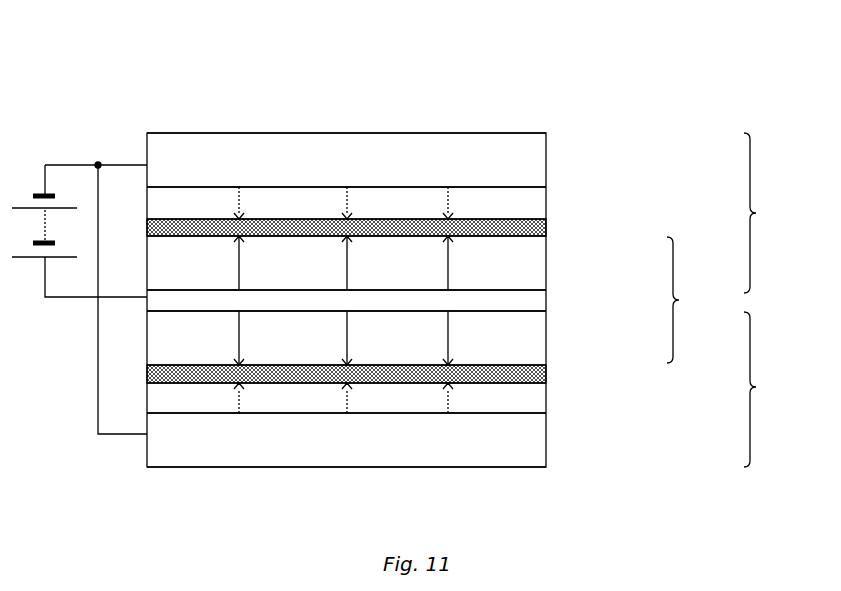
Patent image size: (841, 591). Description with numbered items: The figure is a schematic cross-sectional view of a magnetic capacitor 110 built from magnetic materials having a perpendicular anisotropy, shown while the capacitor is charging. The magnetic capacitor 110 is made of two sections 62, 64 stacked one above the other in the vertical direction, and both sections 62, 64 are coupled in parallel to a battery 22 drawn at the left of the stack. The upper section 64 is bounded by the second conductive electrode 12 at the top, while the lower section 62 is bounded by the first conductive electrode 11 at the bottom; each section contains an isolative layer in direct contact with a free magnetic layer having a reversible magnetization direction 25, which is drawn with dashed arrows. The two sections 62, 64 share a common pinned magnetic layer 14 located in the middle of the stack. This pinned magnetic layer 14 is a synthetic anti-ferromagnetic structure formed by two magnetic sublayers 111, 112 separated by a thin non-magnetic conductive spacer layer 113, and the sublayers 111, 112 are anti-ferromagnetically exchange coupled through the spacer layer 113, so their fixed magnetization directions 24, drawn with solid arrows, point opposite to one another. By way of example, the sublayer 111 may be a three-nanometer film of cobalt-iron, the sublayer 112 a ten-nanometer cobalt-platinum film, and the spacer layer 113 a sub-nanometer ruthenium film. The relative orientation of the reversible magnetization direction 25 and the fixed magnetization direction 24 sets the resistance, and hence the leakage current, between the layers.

The magnetic capacitor 110 is at (553, 115).
The first conductive electrode 11 is at (548, 440).
The second conductive electrode 12 is at (548, 155).
The pinned magnetic layer 14 is at (679, 300).
The battery 22 is at (40, 192).
The fixed magnetization direction 24 is at (450, 243).
The reversible magnetization direction 25 is at (238, 210).
The first section 62 is at (756, 387).
The second section 64 is at (756, 213).
The first magnetic sublayer 111 is at (548, 338).
The second magnetic sublayer 112 is at (548, 260).
The non-magnetic conductive spacer layer 113 is at (548, 300).